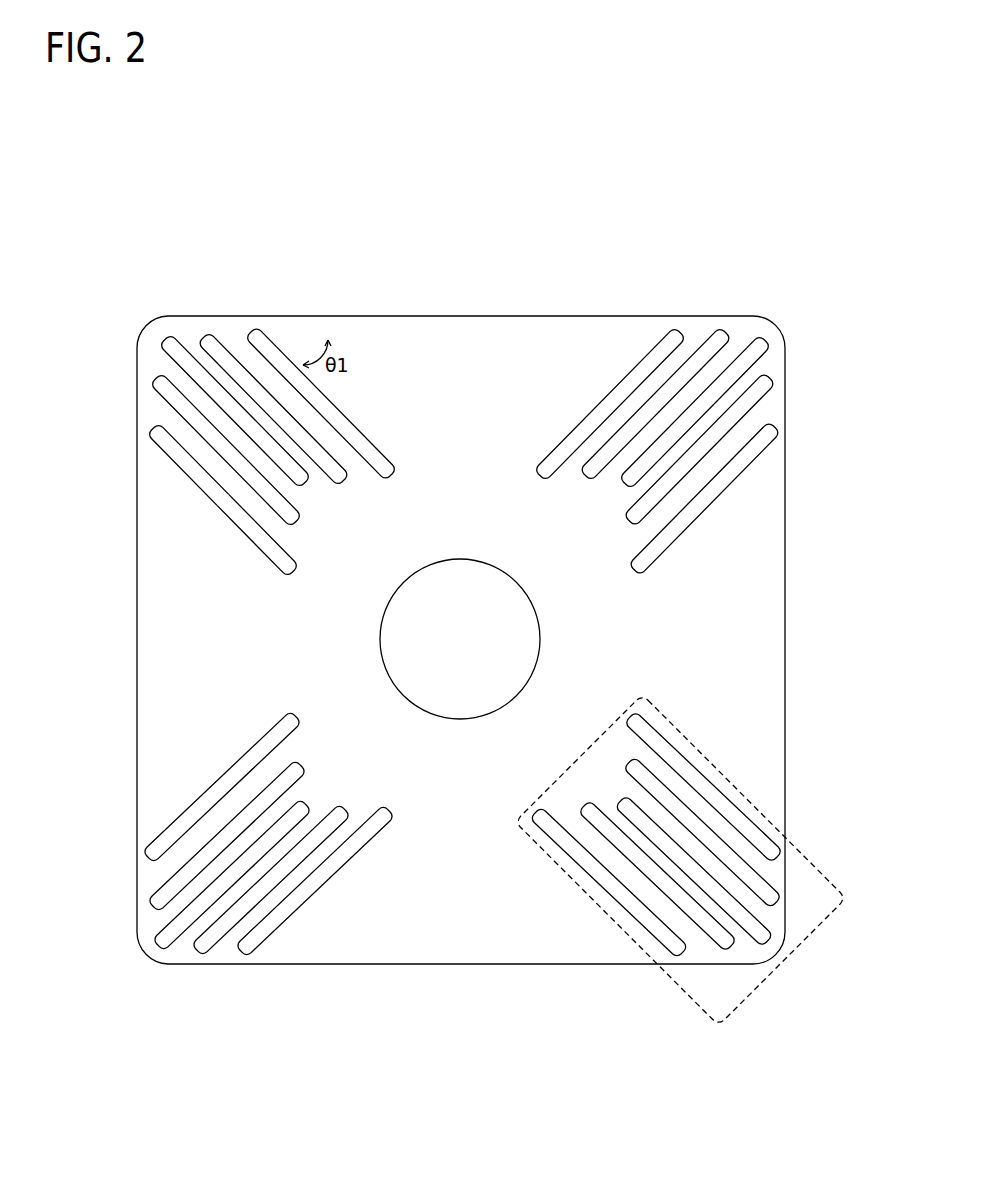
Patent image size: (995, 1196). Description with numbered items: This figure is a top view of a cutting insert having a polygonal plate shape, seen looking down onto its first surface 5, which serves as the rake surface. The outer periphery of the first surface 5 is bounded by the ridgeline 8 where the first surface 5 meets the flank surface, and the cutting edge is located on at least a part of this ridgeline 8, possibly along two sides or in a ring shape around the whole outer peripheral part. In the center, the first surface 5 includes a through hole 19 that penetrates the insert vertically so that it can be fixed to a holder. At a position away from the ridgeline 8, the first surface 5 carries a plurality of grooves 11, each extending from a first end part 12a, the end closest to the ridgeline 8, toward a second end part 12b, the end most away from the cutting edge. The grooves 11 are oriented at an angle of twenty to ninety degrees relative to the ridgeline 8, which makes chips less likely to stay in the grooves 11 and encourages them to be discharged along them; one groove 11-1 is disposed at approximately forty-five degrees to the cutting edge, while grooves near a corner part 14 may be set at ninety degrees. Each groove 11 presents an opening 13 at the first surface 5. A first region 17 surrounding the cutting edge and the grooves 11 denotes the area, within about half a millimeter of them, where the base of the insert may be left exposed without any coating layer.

The first surface 5 is at (492, 358).
The ridgeline 8 is at (447, 316).
The grooves 11 is at (203, 388).
The groove 11-1 is at (332, 413).
The first end part 12a is at (152, 430).
The second end part 12b is at (293, 573).
The opening 13 is at (608, 405).
The corner part 14 is at (778, 330).
The first region 17 is at (770, 920).
The through hole 19 is at (452, 637).